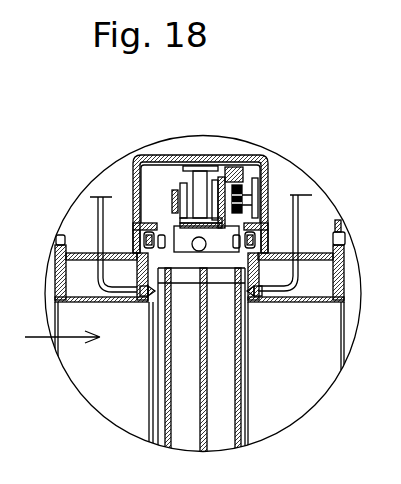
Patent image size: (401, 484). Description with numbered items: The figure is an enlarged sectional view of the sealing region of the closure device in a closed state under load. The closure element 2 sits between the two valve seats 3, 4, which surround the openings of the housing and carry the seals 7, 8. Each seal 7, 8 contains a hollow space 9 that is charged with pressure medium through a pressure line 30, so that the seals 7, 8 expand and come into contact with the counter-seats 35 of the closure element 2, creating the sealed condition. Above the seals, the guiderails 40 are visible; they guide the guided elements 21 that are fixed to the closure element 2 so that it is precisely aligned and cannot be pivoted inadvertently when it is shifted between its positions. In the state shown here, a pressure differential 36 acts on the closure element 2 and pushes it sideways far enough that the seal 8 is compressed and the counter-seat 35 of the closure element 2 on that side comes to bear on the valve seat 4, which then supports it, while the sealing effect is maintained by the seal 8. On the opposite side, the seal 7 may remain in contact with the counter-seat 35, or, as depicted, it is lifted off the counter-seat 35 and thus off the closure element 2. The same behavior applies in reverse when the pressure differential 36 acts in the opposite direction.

The closure element 2 is at (223, 352).
The valve seat 3 is at (140, 271).
The valve seat 4 is at (255, 270).
The seal 7 is at (148, 297).
The seal 8 is at (253, 297).
The hollow space 9 is at (260, 292).
The guided element 21 is at (240, 225).
The pressure line 30 is at (103, 228).
The counter-seat 35 is at (238, 268).
The pressure differential 36 is at (47, 337).
The guiderail 40 is at (147, 218).